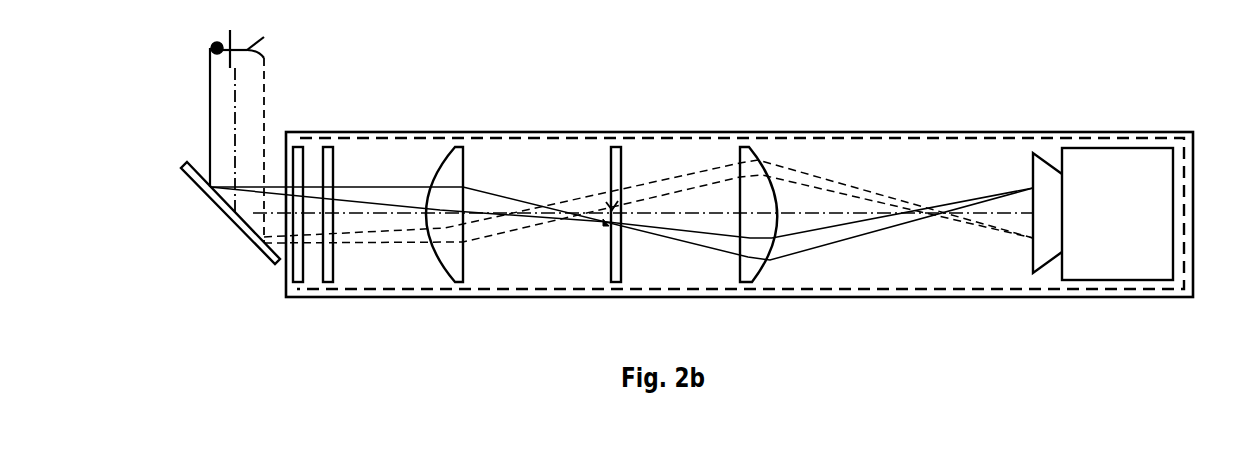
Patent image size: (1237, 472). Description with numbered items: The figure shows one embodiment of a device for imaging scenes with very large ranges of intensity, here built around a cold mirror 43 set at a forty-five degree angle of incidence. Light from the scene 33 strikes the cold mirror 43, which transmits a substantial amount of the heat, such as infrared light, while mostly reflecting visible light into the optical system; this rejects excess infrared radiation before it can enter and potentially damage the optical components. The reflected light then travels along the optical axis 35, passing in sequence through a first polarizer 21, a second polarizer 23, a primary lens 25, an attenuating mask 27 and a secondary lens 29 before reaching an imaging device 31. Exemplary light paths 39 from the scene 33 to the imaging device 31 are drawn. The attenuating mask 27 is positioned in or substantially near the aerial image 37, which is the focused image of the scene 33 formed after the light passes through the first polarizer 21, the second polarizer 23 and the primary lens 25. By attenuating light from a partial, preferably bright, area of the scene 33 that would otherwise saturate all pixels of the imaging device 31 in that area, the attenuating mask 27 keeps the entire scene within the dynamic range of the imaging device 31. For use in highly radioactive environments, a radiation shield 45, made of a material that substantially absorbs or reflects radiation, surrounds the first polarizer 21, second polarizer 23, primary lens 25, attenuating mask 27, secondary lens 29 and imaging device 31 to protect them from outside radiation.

The first polarizer 21 is at (298, 147).
The second polarizer 23 is at (329, 147).
The primary lens 25 is at (455, 147).
The attenuating mask 27 is at (617, 147).
The secondary lens 29 is at (749, 147).
The imaging device 31 is at (1116, 147).
The scene 33 is at (230, 37).
The optical axis 35 is at (380, 217).
The aerial image 37 is at (607, 220).
The light paths 39 is at (873, 230).
The cold mirror 43 is at (180, 162).
The radiation shield 45 is at (740, 297).